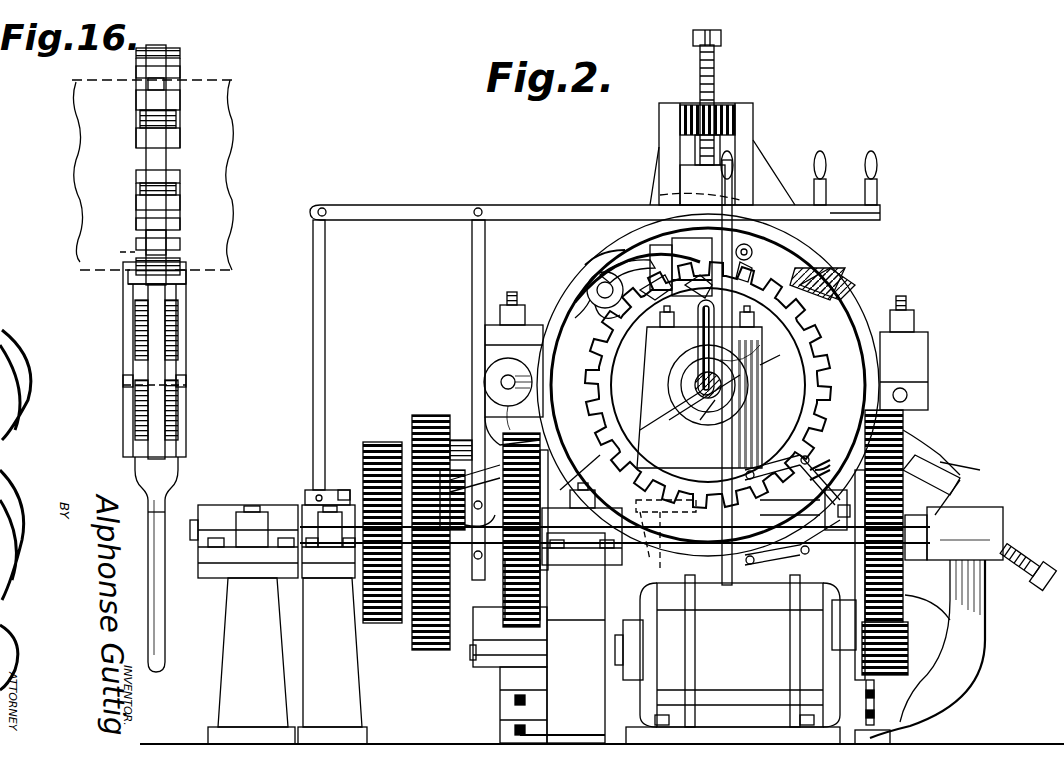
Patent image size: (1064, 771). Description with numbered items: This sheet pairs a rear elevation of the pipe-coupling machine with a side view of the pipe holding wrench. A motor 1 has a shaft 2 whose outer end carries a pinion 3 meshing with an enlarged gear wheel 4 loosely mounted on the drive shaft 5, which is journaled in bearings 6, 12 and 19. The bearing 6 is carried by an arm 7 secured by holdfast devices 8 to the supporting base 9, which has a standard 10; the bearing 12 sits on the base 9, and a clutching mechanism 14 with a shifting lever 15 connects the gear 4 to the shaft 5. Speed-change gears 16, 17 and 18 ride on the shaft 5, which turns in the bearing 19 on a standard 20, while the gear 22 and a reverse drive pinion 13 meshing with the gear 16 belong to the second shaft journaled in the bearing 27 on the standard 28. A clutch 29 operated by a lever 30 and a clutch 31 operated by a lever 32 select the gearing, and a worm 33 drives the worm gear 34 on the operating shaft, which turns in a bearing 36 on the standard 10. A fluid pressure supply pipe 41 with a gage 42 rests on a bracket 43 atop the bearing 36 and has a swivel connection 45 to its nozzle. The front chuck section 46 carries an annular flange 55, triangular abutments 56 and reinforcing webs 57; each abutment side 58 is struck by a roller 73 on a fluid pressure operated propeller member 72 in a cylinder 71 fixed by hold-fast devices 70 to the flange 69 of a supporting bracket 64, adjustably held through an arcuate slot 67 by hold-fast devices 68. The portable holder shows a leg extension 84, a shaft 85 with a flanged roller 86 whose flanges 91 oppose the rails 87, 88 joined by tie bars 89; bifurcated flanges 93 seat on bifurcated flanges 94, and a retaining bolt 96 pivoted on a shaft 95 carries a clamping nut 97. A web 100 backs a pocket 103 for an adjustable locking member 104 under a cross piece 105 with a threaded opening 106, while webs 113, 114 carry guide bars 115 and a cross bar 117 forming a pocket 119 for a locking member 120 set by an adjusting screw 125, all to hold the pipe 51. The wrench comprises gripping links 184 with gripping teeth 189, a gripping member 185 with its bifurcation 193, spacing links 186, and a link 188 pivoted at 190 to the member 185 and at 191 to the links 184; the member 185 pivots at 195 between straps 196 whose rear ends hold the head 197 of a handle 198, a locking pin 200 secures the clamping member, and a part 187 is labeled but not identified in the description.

In FIG. 2, the motor 1 is at (727, 663).
In FIG. 2, the motor shaft 2 is at (858, 656).
In FIG. 2, the pinion 3 is at (905, 674).
In FIG. 2, the gear wheel 4 is at (912, 432).
In FIG. 2, the drive shaft 5 is at (930, 535).
In FIG. 2, the bearing 6 is at (985, 507).
In FIG. 2, the arm 7 is at (975, 650).
In FIG. 2, the holdfast devices 8 is at (876, 712).
In FIG. 2, the supporting base 9 is at (576, 638).
In FIG. 2, the standard 10 is at (630, 485).
In FIG. 2, the bearing 12 is at (598, 508).
In FIG. 2, the reverse drive pinion 13 is at (535, 600).
In FIG. 2, the clutching mechanism 14 is at (714, 582).
In FIG. 2, the shifting lever 15 is at (725, 367).
In FIG. 2, the gear 16 is at (542, 575).
In FIG. 2, the gear 17 is at (480, 582).
In FIG. 2, the gear 18 is at (381, 446).
In FIG. 2, the bearing 19 is at (305, 515).
In FIG. 2, the standard 20 is at (340, 662).
In FIG. 2, the gear 22 is at (435, 645).
In FIG. 2, the bearing 27 is at (240, 500).
In FIG. 2, the standard 28 is at (228, 633).
In FIG. 2, the clutch 29 is at (345, 488).
In FIG. 2, the lever 30 is at (536, 197).
In FIG. 2, the clutch 31 is at (500, 492).
In FIG. 2, the lever 32 is at (868, 218).
In FIG. 2, the worm 33 is at (668, 516).
In FIG. 2, the worm gear 34 is at (586, 398).
In FIG. 2, the bearing 36 is at (667, 350).
In FIG. 2, the fluid pressure supply pipe 41 is at (695, 336).
In FIG. 2, the gage 42 is at (688, 292).
In FIG. 2, the bracket 43 is at (698, 312).
In FIG. 2, the swivel connection 45 is at (690, 400).
In FIG. 2, the front chuck section 46 is at (822, 250).
In FIG. 16, the pipe 51 is at (230, 127).
In FIG. 2, the annular flange 55 is at (612, 228).
In FIG. 2, the abutments 56 is at (780, 268).
In FIG. 2, the reinforcing webs 57 is at (840, 292).
In FIG. 2, the abutment side 58 is at (752, 312).
In FIG. 2, the supporting bracket 64 is at (598, 306).
In FIG. 2, the arcuate slot 67 is at (598, 290).
In FIG. 2, the hold-fast devices 68 is at (596, 270).
In FIG. 2, the flange 69 is at (700, 215).
In FIG. 2, the hold-fast devices 70 is at (650, 300).
In FIG. 2, the cylinder 71 is at (681, 267).
In FIG. 2, the propeller member 72 is at (752, 252).
In FIG. 2, the roller 73 is at (756, 272).
In FIG. 2, the depending extension 84 is at (490, 637).
In FIG. 2, the shaft 85 is at (474, 668).
In FIG. 2, the flanged roller 86 is at (540, 657).
In FIG. 2, the rail 87 is at (535, 737).
In FIG. 2, the rail 88 is at (893, 735).
In FIG. 2, the tie bars 89 is at (510, 731).
In FIG. 2, the roller flanges 91 is at (502, 690).
In FIG. 2, the bifurcated flanges 93 is at (487, 338).
In FIG. 2, the bifurcated flanges 94 is at (485, 388).
In FIG. 2, the shaft 95 is at (514, 375).
In FIG. 2, the retaining bolt 96 is at (714, 292).
In FIG. 2, the clamping nut 97 is at (522, 308).
In FIG. 2, the web 100 is at (758, 182).
In FIG. 2, the pocket 103 is at (738, 148).
In FIG. 2, the adjustable locking member 104 is at (680, 185).
In FIG. 2, the cross piece 105 is at (735, 118).
In FIG. 2, the threaded opening 106 is at (660, 178).
In FIG. 2, the web 113 is at (930, 442).
In FIG. 2, the web 114 is at (485, 432).
In FIG. 2, the guide bar 115 is at (950, 468).
In FIG. 2, the cross bar 117 is at (958, 490).
In FIG. 2, the pocket 119 is at (948, 478).
In FIG. 2, the locking member 120 is at (556, 482).
In FIG. 2, the adjusting screw 125 is at (714, 66).
In FIG. 16, the gripping links 184 is at (178, 190).
In FIG. 16, the gripping member 185 is at (180, 242).
In FIG. 16, the spacing links 186 is at (165, 157).
In FIG. 16, the gear 187 is at (135, 315).
In FIG. 16, the link 188 is at (158, 232).
In FIG. 16, the gripping teeth 189 is at (178, 100).
In FIG. 16, the pivotal connection 190 is at (135, 210).
In FIG. 16, the pivotal connection 191 is at (137, 252).
In FIG. 16, the bifurcation 193 is at (185, 276).
In FIG. 16, the pivotal connection 195 is at (186, 292).
In FIG. 16, the straps 196 is at (125, 340).
In FIG. 16, the head 197 is at (147, 470).
In FIG. 16, the handle 198 is at (148, 512).
In FIG. 16, the locking pin 200 is at (123, 385).